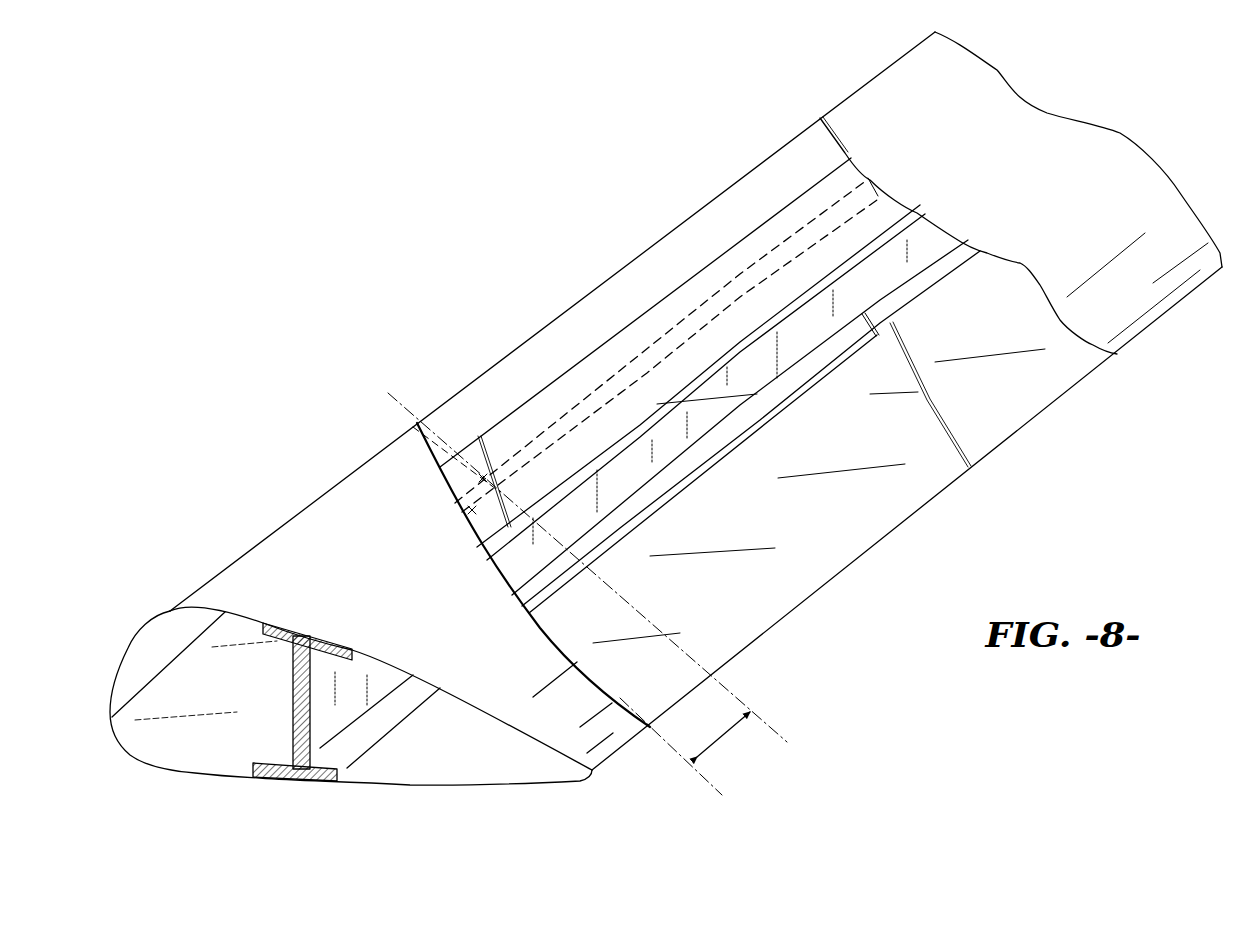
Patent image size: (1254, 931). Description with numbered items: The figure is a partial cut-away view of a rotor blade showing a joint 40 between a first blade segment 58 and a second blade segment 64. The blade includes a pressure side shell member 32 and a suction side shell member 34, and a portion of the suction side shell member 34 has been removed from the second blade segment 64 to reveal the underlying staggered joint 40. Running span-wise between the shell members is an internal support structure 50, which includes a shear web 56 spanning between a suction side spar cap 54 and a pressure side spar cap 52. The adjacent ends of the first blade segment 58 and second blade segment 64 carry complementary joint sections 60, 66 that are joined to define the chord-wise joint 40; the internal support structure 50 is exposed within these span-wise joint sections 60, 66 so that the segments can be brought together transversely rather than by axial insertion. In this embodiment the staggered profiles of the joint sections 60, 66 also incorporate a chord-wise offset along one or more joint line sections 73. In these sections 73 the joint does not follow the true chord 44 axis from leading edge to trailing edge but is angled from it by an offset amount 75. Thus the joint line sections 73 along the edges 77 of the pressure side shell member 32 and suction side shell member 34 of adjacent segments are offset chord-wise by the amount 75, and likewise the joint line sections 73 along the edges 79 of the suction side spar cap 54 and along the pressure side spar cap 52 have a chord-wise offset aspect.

The pressure side shell member 32 is at (820, 540).
The suction side shell member 34 is at (308, 563).
The joint 40 is at (570, 258).
The chord 44 is at (747, 697).
The internal support structure 50 is at (270, 705).
The pressure side spar cap 52 is at (418, 720).
The suction side spar cap 54 is at (672, 317).
The shear web 56 is at (335, 730).
The first blade segment 58 is at (610, 747).
The joint section 60 is at (557, 390).
The second blade segment 64 is at (1043, 363).
The joint section 66 is at (710, 288).
The joint line section 73 is at (488, 455).
The offset amount 75 is at (707, 750).
The edge 77 is at (557, 643).
The edge 79 is at (505, 518).